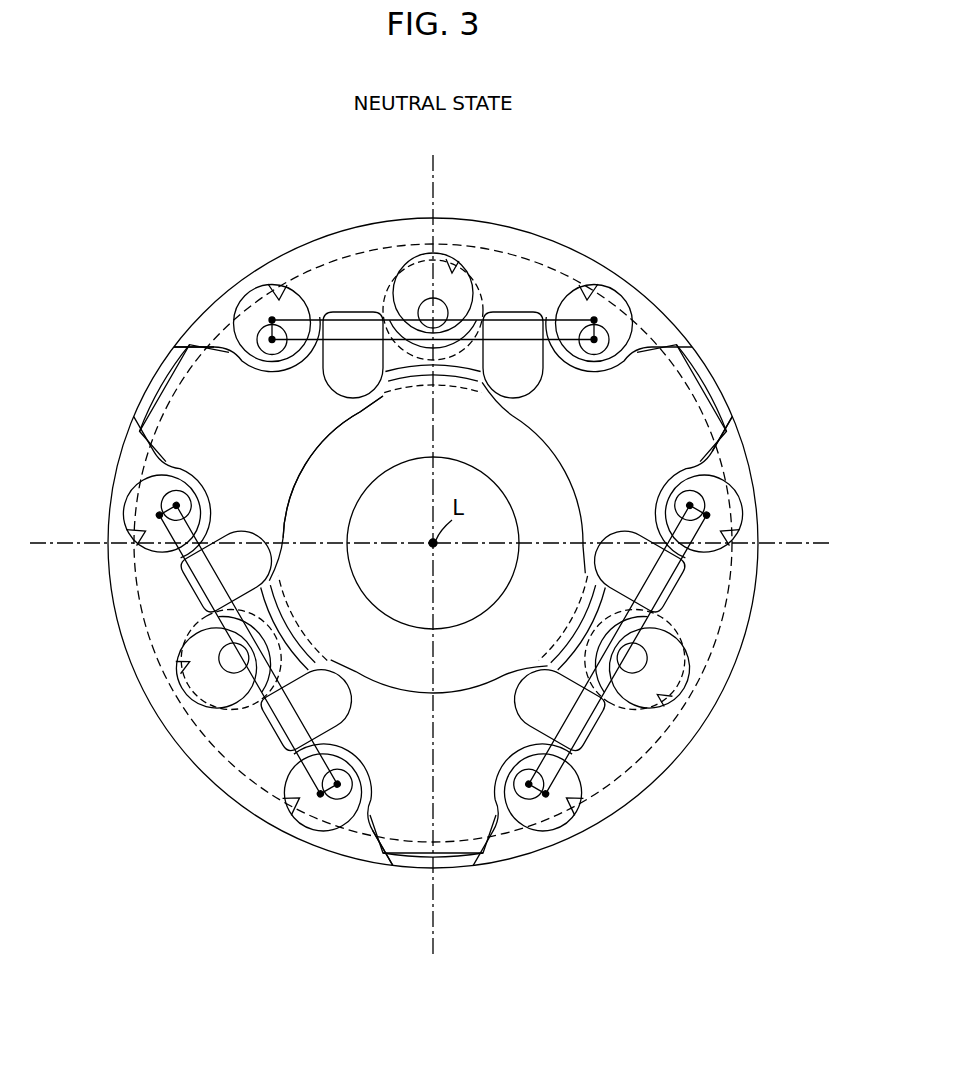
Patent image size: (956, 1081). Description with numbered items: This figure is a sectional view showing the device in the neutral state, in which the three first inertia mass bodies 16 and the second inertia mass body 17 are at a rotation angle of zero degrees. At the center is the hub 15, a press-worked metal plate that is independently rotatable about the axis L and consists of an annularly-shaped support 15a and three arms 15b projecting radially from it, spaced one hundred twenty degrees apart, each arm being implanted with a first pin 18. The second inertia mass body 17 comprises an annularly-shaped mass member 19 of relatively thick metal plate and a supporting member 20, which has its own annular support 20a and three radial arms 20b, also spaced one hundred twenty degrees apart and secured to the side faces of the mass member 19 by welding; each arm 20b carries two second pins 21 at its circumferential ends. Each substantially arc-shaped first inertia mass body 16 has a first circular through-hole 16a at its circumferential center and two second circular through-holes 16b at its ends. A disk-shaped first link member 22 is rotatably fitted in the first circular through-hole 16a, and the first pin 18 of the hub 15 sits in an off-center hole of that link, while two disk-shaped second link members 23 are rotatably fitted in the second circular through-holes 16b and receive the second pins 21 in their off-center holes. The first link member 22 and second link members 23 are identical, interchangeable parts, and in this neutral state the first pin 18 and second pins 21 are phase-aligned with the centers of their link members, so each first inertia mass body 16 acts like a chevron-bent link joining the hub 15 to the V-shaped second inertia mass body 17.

The hub 15 is at (578, 490).
The support 15a is at (317, 470).
The arms 15b is at (458, 356).
The first inertia mass body 16 is at (515, 224).
The first circular through-hole 16a is at (456, 265).
The second circular through-holes 16b is at (286, 283).
The second inertia mass body 17 is at (713, 363).
The first pin 18 is at (425, 310).
The mass member 19 is at (158, 382).
The supporting member 20 is at (418, 857).
The support 20a is at (385, 378).
The arms 20b is at (178, 408).
The second pins 21 is at (268, 352).
The first link member 22 is at (465, 296).
The second link members 23 is at (252, 308).